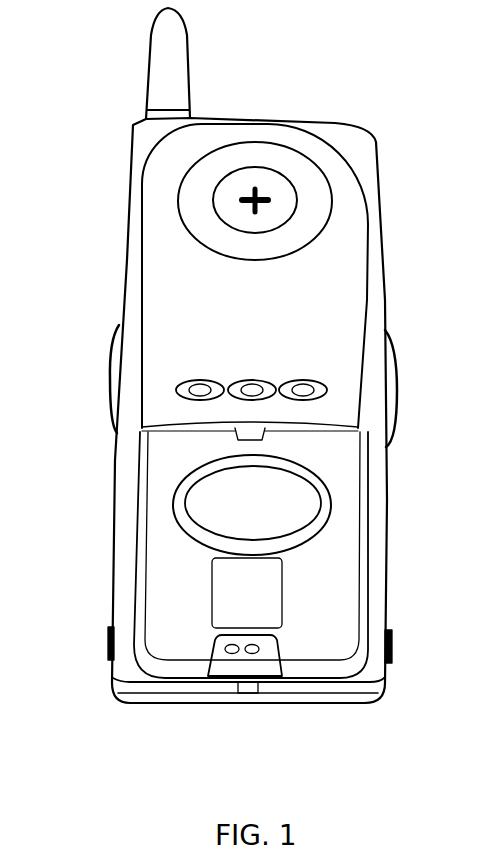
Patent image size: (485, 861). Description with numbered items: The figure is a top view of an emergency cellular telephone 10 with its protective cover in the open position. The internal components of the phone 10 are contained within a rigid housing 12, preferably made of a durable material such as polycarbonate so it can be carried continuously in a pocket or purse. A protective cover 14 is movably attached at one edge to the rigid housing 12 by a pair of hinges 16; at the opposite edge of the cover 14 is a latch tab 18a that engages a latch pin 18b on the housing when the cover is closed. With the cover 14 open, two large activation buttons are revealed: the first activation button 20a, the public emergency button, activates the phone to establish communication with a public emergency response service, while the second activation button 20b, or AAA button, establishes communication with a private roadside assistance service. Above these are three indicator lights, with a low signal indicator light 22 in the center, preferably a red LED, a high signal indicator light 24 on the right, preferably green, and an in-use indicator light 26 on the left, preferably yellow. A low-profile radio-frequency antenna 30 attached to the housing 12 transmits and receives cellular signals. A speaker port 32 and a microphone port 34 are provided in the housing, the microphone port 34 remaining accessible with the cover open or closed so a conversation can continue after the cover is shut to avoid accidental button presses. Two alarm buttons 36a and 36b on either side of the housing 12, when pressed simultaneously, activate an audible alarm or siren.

The emergency cellular telephone 10 is at (72, 185).
The rigid housing 12 is at (125, 240).
The protective cover 14 is at (148, 700).
The hinges 16 is at (108, 645).
The latch tab 18a is at (260, 700).
The latch pin 18b is at (262, 414).
The first activation button 20a is at (317, 502).
The second activation button 20b is at (212, 590).
The low signal indicator light 22 is at (253, 381).
The high signal indicator light 24 is at (308, 381).
The in-use indicator light 26 is at (197, 381).
The radio-frequency antenna 30 is at (190, 45).
The speaker port 32 is at (268, 170).
The microphone port 34 is at (282, 648).
The alarm button 36a is at (110, 370).
The alarm button 36b is at (398, 378).